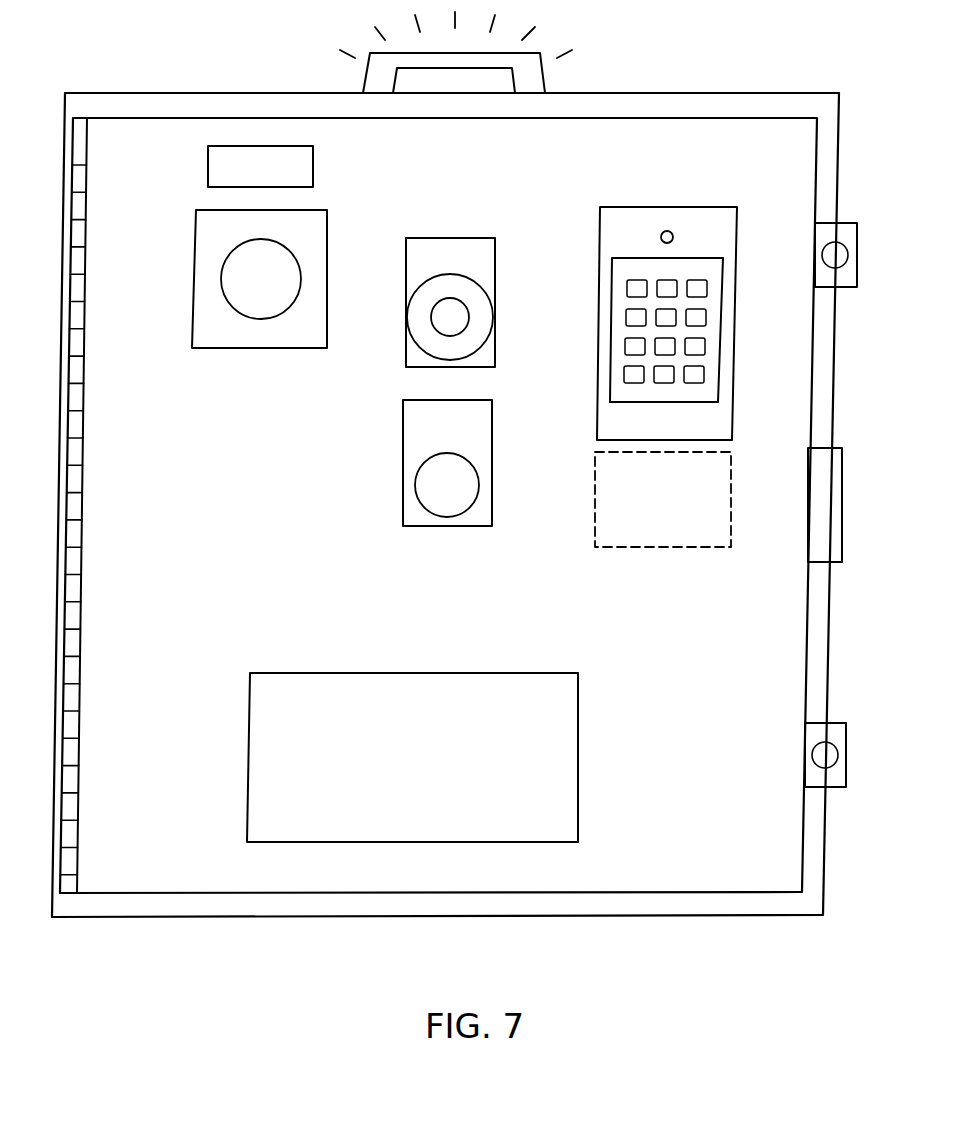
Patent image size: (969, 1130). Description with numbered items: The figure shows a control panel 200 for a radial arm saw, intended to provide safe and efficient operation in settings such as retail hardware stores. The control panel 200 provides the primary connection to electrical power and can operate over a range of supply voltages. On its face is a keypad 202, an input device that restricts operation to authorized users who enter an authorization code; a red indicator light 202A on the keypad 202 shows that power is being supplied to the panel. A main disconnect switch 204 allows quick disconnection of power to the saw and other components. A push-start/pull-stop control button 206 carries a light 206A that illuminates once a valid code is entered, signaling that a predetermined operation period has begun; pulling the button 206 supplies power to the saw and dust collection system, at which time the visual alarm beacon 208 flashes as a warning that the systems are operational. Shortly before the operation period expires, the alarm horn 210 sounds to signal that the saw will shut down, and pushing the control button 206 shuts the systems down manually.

The control panel 200 is at (592, 920).
The keypad 202 is at (695, 300).
The red indicator light 202A is at (675, 230).
The main disconnect switch 204 is at (197, 223).
The push-start/pull-stop control button 206 is at (456, 322).
The light 206A is at (463, 302).
The visual alarm beacon 208 is at (540, 82).
The alarm horn 210 is at (440, 515).